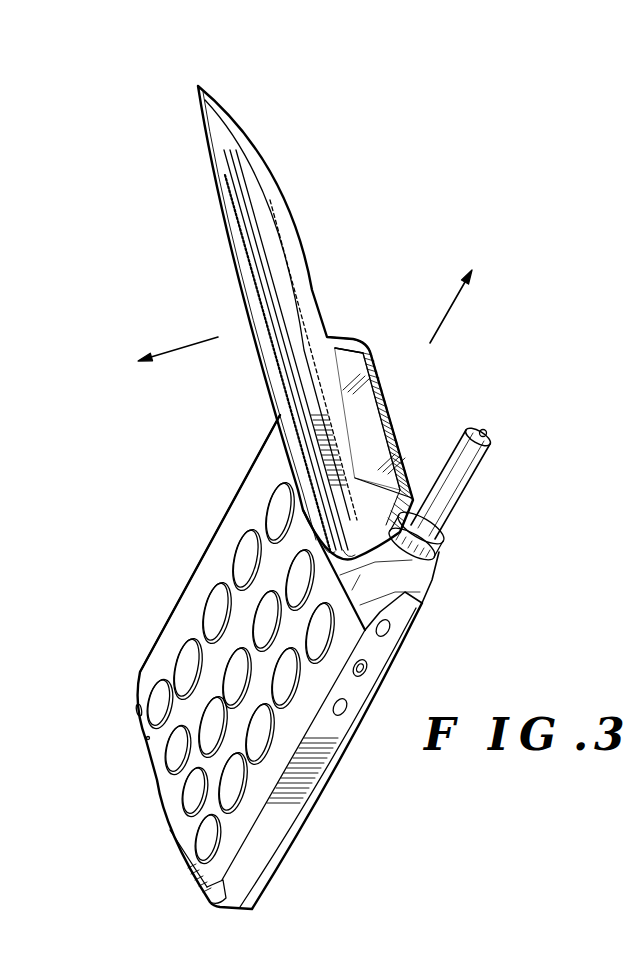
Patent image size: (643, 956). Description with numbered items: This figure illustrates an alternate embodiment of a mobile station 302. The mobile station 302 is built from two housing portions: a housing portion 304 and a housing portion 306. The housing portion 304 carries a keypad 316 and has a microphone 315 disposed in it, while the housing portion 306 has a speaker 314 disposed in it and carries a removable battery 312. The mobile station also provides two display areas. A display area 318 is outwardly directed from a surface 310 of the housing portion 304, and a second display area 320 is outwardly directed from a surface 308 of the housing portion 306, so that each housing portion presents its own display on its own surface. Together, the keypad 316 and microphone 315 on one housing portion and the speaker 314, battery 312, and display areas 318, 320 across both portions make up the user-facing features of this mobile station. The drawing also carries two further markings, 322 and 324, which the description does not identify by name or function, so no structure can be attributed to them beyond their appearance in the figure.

The mobile station 302 is at (310, 807).
The housing portion 304 is at (280, 870).
The housing portion 306 is at (282, 197).
The surface 308 is at (250, 493).
The surface 310 is at (350, 337).
The removable battery 312 is at (340, 447).
The speaker 314 is at (237, 209).
The microphone 315 is at (148, 738).
The keypad 316 is at (222, 577).
The display area 318 is at (362, 398).
The display area 320 is at (258, 302).
The direction arrow 322 is at (452, 303).
The direction arrow 324 is at (190, 347).